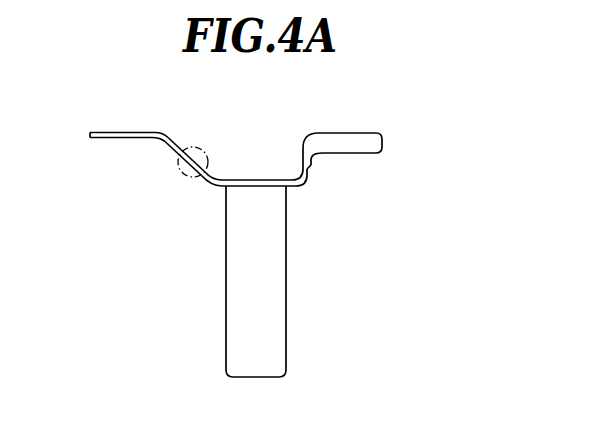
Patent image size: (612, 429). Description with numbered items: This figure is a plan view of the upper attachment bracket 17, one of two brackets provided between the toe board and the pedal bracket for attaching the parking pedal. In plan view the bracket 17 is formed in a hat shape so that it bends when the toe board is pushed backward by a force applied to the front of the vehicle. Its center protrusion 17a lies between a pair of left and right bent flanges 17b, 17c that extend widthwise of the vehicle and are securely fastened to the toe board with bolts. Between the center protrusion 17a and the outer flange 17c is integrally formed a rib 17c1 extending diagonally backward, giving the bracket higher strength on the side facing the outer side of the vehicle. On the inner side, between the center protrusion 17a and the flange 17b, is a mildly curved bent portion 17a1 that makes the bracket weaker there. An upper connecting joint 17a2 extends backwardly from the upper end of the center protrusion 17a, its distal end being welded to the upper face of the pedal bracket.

The upper attachment bracket 17 is at (139, 196).
The center protrusion 17a is at (253, 180).
The bent portion 17a1 is at (195, 178).
The upper connecting joint 17a2 is at (265, 295).
The bent flange 17b is at (113, 132).
The bent flange 17c is at (320, 133).
The rib 17c1 is at (359, 145).